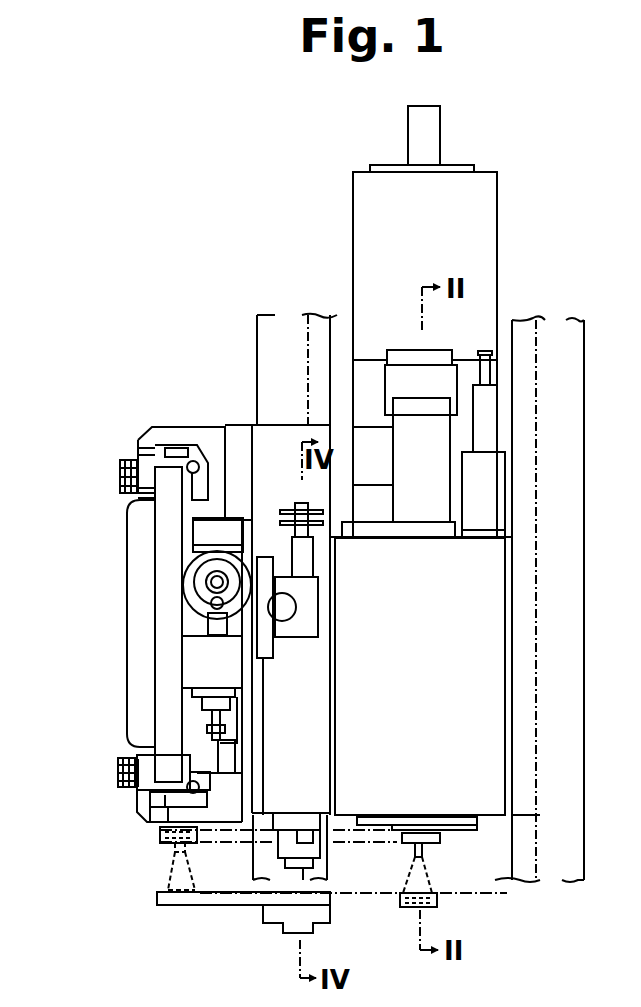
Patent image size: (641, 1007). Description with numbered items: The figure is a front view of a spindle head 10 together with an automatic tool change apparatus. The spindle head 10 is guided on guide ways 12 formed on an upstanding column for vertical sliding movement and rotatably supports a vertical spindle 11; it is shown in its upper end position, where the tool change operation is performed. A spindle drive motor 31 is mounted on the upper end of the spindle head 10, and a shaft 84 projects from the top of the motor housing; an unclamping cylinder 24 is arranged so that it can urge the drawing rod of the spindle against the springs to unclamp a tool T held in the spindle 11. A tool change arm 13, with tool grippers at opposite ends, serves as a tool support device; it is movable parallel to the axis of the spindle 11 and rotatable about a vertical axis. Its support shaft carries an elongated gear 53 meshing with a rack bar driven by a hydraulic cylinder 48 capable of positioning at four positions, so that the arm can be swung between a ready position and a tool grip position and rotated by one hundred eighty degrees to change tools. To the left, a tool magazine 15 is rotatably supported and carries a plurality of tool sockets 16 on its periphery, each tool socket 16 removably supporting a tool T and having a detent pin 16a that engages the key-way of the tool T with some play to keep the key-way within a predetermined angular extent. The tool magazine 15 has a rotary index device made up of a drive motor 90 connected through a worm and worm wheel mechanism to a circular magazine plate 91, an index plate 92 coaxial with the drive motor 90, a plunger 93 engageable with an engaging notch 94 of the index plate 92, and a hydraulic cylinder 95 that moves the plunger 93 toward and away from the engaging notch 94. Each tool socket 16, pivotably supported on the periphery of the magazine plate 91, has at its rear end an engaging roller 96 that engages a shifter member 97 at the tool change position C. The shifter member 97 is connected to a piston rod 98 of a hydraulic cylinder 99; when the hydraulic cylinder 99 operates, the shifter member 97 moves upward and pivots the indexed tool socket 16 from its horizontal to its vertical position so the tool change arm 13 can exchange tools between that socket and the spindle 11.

The spindle head 10 is at (490, 708).
The spindle 11 is at (440, 825).
The guide ways 12 is at (327, 822).
The tool change arm 13 is at (313, 833).
The tool magazine 15 is at (173, 425).
The tool socket 16 is at (147, 490).
The detent pin 16a is at (120, 768).
The unclamping cylinder 24 is at (434, 373).
The spindle drive motor 31 is at (483, 233).
The hydraulic cylinder 48 is at (295, 640).
The elongated gear 53 is at (305, 565).
The shaft 84 is at (430, 152).
The drive motor 90 is at (190, 580).
The magazine plate 91 is at (168, 622).
The index plate 92 is at (210, 562).
The plunger 93 is at (213, 622).
The engaging notch 94 is at (212, 604).
The hydraulic cylinder 95 is at (197, 658).
The engaging roller 96 is at (190, 795).
The shifter member 97 is at (205, 792).
The piston rod 98 is at (225, 755).
The hydraulic cylinder 99 is at (203, 713).
The tool change position C is at (130, 805).
The tool T is at (120, 476).